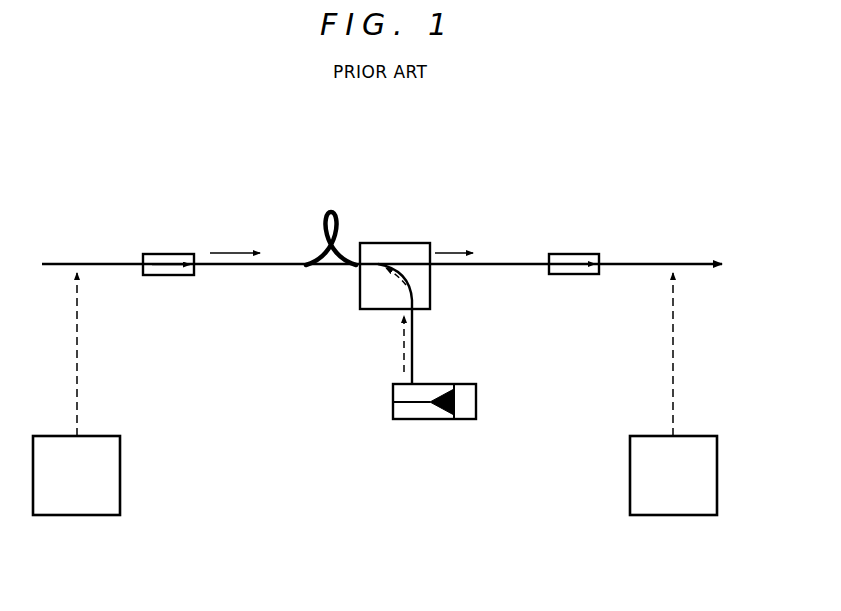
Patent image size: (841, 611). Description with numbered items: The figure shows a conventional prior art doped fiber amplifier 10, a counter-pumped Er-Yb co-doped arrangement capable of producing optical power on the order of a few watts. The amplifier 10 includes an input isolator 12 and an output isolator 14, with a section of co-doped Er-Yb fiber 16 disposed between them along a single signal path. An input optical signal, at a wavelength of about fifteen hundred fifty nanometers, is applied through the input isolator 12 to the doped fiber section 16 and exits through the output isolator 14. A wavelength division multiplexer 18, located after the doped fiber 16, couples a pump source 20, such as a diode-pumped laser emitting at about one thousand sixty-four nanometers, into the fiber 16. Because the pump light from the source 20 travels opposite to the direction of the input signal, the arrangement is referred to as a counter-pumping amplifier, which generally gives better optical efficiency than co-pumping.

The doped fiber amplifier 10 is at (392, 120).
The input isolator 12 is at (171, 252).
The output isolator 14 is at (575, 252).
The co-doped Er-Yb fiber 16 is at (285, 241).
The wavelength division multiplexer 18 is at (432, 296).
The pump source 20 is at (477, 402).